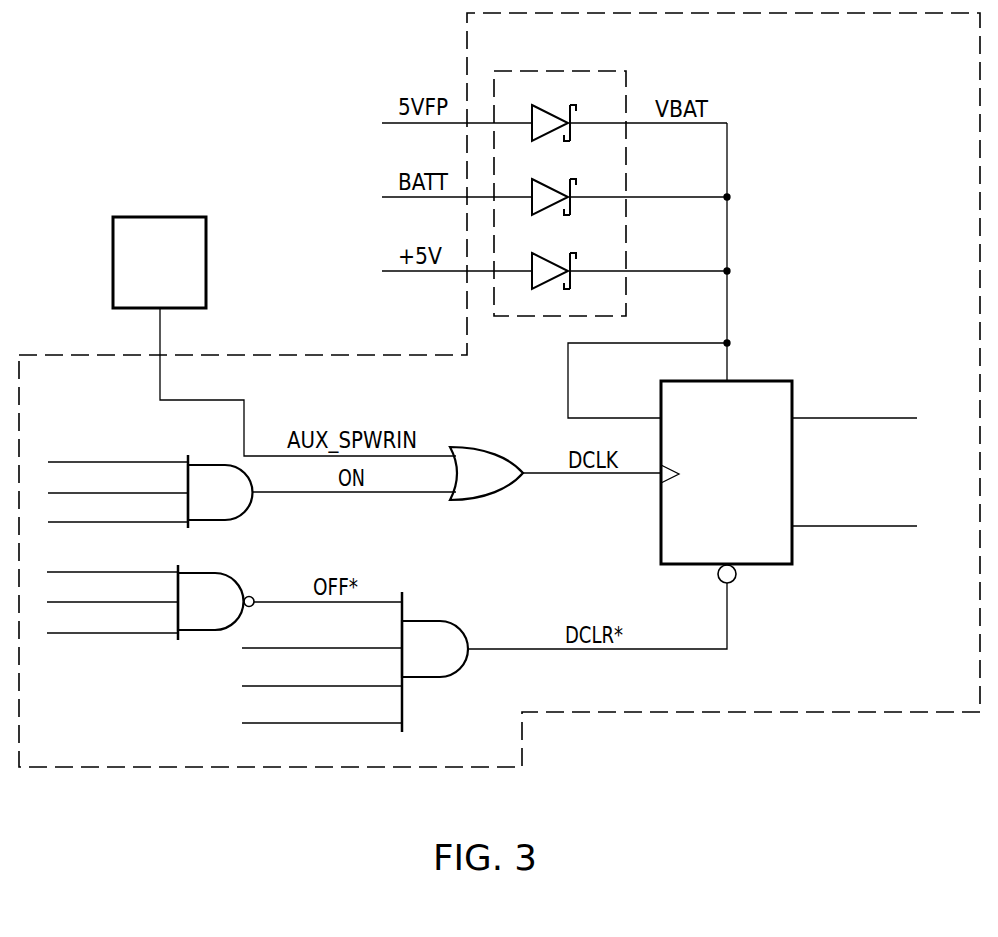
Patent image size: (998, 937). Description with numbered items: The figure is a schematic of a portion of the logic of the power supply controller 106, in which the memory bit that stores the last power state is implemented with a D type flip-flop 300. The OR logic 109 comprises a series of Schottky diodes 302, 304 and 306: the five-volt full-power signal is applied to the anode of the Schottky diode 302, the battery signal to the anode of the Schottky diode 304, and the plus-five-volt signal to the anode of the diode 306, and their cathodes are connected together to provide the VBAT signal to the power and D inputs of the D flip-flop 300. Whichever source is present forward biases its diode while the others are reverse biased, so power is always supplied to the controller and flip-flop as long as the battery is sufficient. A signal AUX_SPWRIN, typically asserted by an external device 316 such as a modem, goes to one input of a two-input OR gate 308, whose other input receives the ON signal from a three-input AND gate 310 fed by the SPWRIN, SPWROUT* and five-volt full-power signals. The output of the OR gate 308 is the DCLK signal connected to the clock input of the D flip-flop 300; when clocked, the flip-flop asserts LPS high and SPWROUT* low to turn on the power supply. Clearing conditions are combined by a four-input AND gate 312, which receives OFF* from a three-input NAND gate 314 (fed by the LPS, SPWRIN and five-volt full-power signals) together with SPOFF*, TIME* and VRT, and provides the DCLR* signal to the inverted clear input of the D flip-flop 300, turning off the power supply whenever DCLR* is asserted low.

The power supply controller 106 is at (43, 357).
The OR logic 109 is at (505, 71).
The D type flip-flop 300 is at (777, 387).
The Schottky diode 302 is at (546, 110).
The Schottky diode 304 is at (546, 184).
The Schottky diode 306 is at (546, 258).
The two-input OR gate 308 is at (477, 450).
The three-input AND gate 310 is at (203, 458).
The four-input AND gate 312 is at (436, 618).
The three-input NAND gate 314 is at (208, 577).
The external device 316 is at (189, 222).